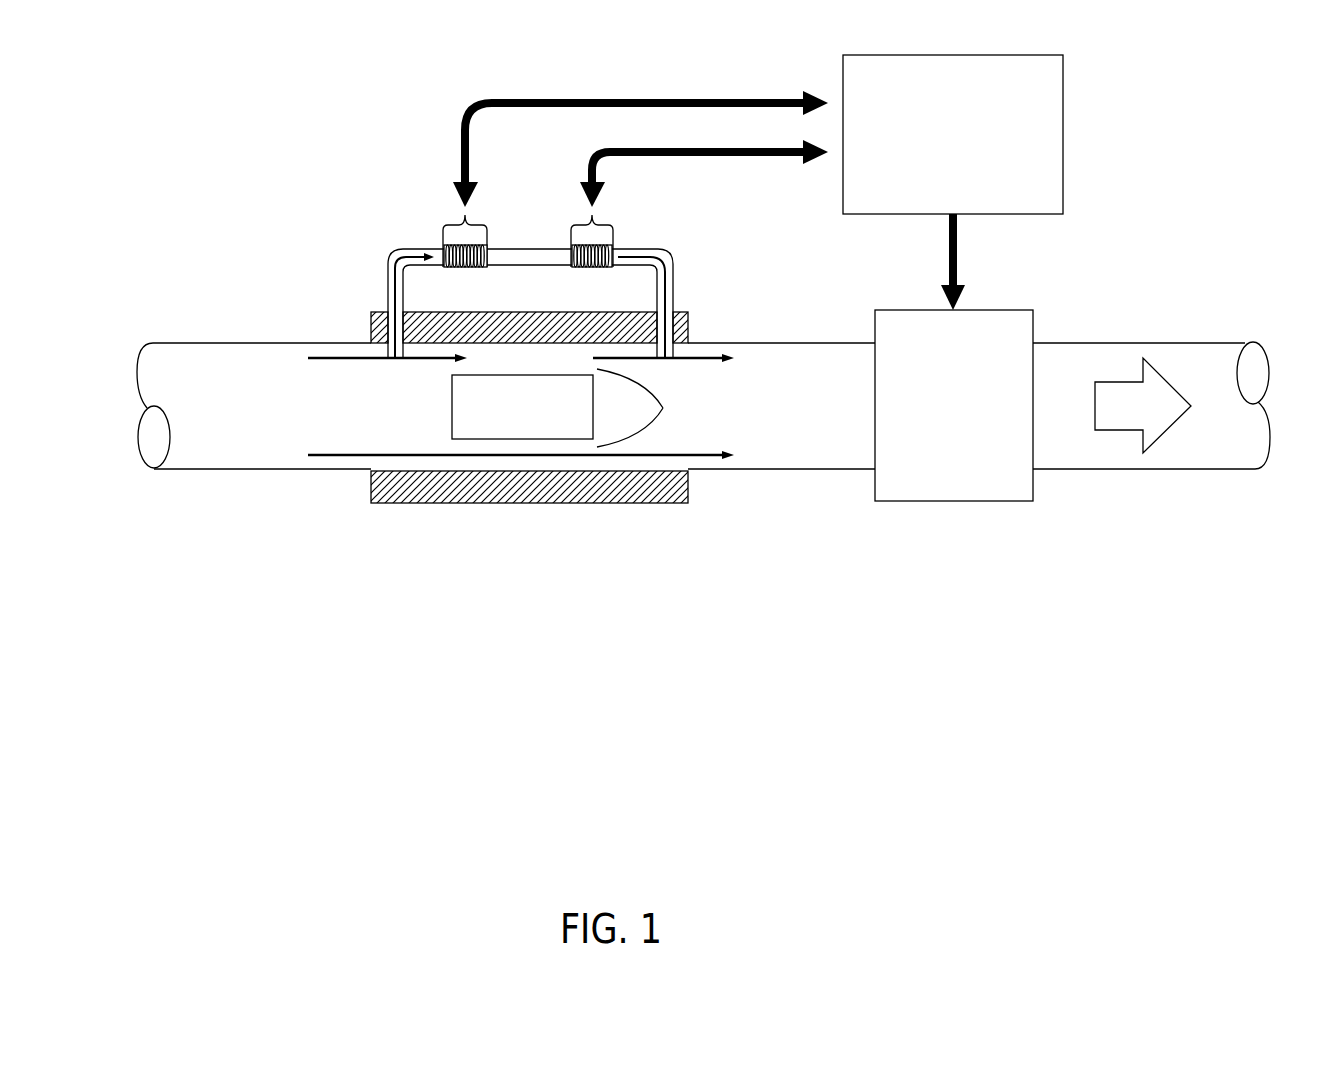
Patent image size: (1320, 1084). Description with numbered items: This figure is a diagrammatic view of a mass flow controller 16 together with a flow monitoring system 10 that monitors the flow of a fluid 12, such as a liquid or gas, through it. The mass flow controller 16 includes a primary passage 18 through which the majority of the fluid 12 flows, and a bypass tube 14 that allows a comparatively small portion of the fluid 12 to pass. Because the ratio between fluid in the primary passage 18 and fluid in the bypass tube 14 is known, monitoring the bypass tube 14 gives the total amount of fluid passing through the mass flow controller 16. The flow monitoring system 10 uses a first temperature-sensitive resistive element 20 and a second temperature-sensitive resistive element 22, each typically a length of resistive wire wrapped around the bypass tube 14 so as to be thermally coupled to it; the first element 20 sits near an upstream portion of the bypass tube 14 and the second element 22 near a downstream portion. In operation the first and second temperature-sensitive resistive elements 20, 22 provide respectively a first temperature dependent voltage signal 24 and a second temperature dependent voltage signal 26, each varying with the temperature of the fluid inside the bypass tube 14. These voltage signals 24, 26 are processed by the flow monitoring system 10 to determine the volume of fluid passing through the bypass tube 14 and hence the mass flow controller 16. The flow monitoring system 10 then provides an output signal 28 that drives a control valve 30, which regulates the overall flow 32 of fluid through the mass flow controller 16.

The flow monitoring system 10 is at (953, 134).
The fluid 12 is at (327, 362).
The bypass tube 14 is at (420, 247).
The mass flow controller 16 is at (530, 503).
The primary passage 18 is at (571, 408).
The first temperature-sensitive resistive element 20 is at (467, 268).
The second temperature-sensitive resistive element 22 is at (592, 268).
The first temperature dependent voltage signal 24 is at (685, 102).
The second temperature dependent voltage signal 26 is at (685, 157).
The output signal 28 is at (950, 244).
The control valve 30 is at (954, 405).
The overall flow 32 is at (1127, 432).